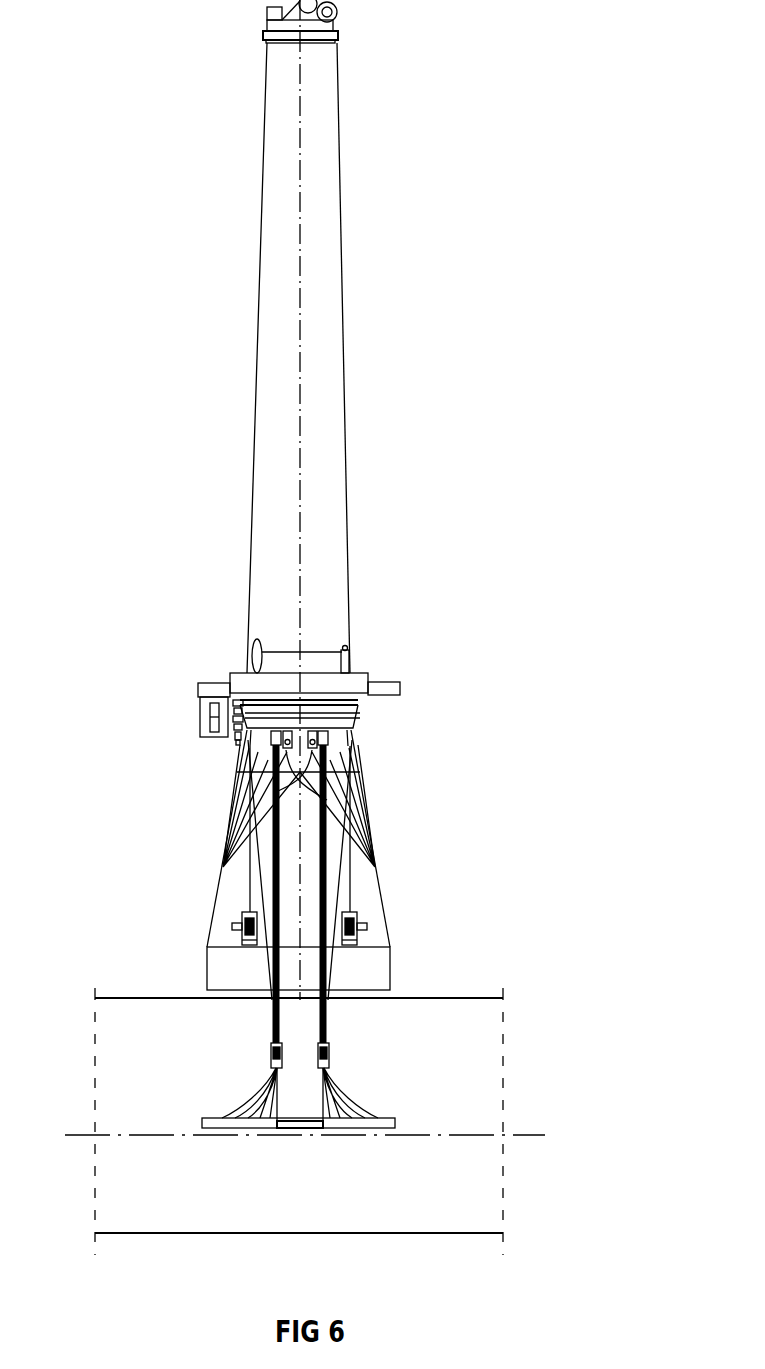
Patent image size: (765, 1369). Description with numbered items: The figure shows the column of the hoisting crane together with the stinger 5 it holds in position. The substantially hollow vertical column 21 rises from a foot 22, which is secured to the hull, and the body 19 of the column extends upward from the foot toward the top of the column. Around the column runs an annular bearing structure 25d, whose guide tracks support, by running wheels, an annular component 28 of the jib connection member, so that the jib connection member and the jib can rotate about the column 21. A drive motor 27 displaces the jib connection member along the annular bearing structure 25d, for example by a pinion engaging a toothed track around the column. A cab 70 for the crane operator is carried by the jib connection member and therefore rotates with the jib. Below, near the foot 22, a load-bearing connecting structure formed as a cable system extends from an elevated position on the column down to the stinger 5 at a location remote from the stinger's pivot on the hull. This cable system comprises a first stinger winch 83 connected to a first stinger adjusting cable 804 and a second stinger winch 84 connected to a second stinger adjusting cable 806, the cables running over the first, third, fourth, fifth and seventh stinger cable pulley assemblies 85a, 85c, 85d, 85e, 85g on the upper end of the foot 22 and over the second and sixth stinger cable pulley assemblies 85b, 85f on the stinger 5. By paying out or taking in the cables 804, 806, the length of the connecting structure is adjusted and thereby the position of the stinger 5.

The stinger 5 is at (397, 1123).
The body 19 is at (347, 393).
The substantially hollow vertical column 21 is at (212, 485).
The foot 22 is at (383, 894).
The annular bearing structure 25d is at (380, 714).
The drive motor 27 is at (235, 742).
The annular component 28 is at (370, 676).
The cab 70 is at (200, 708).
The first stinger winch 83 is at (232, 927).
The second stinger winch 84 is at (368, 927).
The first stinger cable pulley assembly 85a is at (232, 748).
The second stinger cable pulley assembly 85b is at (270, 1058).
The third stinger cable pulley assembly 85c is at (223, 867).
The fourth stinger cable pulley assembly 85d is at (327, 800).
The fifth stinger cable pulley assembly 85e is at (356, 745).
The sixth stinger cable pulley assembly 85f is at (330, 1058).
The seventh stinger cable pulley assembly 85g is at (330, 733).
The first stinger adjusting cable 804 is at (266, 965).
The second stinger adjusting cable 806 is at (333, 965).